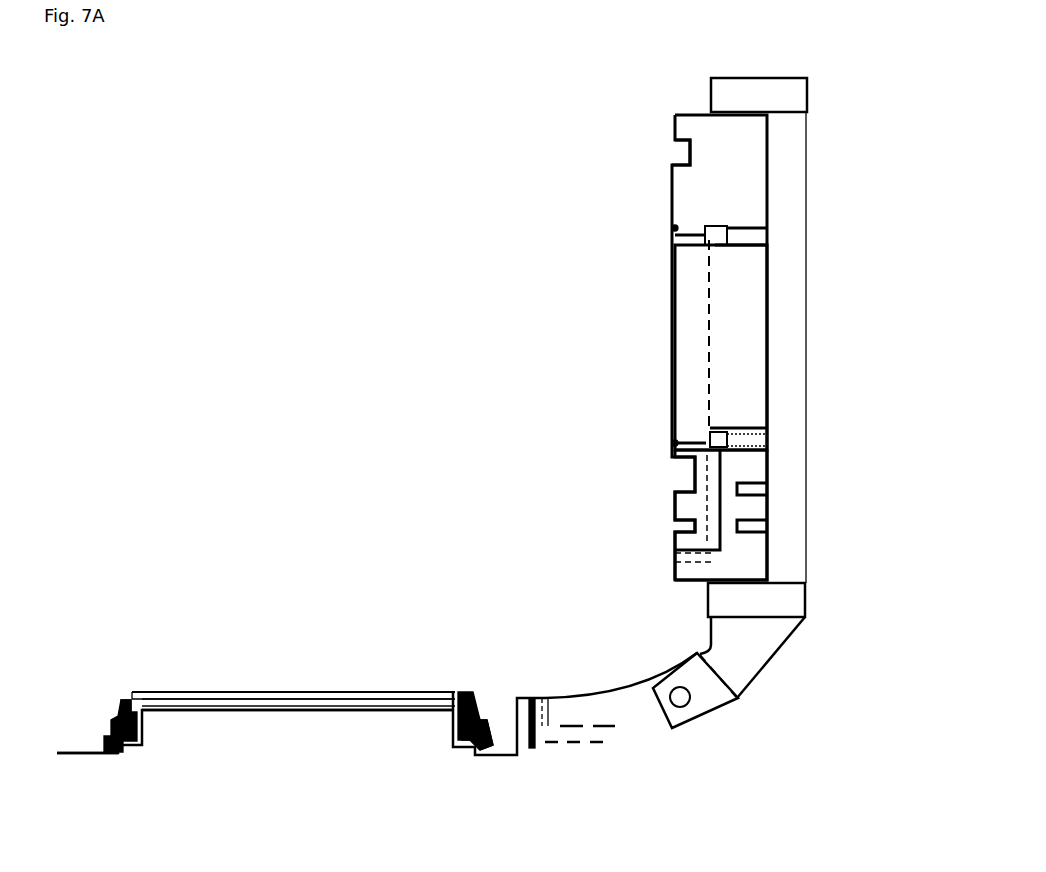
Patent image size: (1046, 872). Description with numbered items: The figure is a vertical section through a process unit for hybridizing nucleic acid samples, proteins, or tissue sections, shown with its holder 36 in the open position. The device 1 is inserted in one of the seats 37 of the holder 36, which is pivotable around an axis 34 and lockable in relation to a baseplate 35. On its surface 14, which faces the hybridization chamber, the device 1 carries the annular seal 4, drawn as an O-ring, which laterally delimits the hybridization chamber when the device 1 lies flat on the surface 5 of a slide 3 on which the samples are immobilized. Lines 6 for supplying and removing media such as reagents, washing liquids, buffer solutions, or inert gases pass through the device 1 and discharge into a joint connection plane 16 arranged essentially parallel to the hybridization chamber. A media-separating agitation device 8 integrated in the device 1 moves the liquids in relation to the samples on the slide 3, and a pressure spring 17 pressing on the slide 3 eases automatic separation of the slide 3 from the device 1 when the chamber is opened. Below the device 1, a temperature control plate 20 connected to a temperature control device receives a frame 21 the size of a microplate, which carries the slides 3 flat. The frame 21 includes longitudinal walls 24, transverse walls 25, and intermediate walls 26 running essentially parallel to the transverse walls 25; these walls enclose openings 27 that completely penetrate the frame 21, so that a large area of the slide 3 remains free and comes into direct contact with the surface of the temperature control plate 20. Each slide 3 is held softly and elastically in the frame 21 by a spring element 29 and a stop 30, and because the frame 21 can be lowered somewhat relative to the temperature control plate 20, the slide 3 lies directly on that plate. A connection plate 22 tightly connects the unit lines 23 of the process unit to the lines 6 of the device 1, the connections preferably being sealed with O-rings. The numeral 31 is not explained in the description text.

The device 1 is at (742, 186).
The slide 3 is at (152, 695).
The seal 4 is at (675, 229).
The surface 5 is at (268, 690).
The lines 6 is at (648, 508).
The agitation device 8 is at (773, 433).
The surface 14 is at (668, 341).
The connection plane 16 is at (668, 543).
The pressure spring 17 is at (675, 152).
The temperature control plate 20 is at (298, 753).
The frame 21 is at (505, 690).
The connection plate 22 is at (545, 697).
The unit lines 23 is at (573, 752).
The longitudinal walls 24 is at (478, 700).
The transverse walls 25 is at (293, 642).
The intermediate walls 26 is at (345, 705).
The openings 27 is at (355, 730).
The spring element 29 is at (460, 700).
The stop 30 is at (130, 695).
The edge 31 is at (112, 702).
The axis 34 is at (685, 700).
The baseplate 35 is at (80, 754).
The holder 36 is at (725, 87).
The seats 37 is at (790, 125).